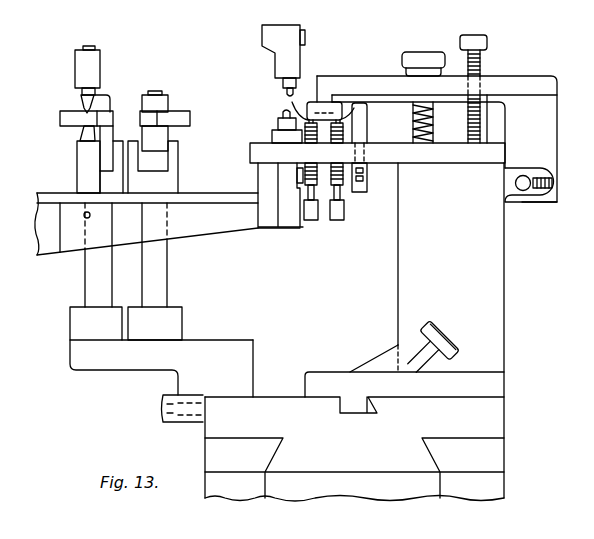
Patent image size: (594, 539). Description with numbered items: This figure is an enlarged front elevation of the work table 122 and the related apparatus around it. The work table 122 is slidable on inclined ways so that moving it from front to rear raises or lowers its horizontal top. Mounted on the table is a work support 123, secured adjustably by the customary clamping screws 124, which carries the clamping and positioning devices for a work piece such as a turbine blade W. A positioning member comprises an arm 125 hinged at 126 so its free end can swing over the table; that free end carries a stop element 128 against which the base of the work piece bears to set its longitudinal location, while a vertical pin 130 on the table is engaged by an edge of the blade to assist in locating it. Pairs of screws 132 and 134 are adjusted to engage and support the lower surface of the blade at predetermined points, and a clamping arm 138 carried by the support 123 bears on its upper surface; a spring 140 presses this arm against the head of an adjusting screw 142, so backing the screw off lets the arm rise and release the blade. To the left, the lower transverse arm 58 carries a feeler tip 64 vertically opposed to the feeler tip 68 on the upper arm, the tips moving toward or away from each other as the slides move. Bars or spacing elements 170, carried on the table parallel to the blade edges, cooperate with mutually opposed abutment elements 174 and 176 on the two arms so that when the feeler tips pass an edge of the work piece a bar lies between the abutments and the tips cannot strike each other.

The abutment element 176 is at (93, 108).
The bars or spacing elements 170 is at (73, 120).
The abutment element 174 is at (83, 141).
The transverse arm 58 is at (167, 307).
The feeler tip 68 is at (282, 95).
The feeler tip 64 is at (283, 117).
The turbine blade work piece W is at (298, 103).
The stop element 128 is at (325, 100).
The clamping screws 134 is at (312, 221).
The clamping screws 132 is at (337, 221).
The vertical pin 130 is at (362, 130).
The arm 125 is at (515, 84).
The spring 140 is at (430, 143).
The adjusting screw 142 is at (433, 42).
The clamping arm 138 is at (487, 111).
The hinge 126 is at (527, 190).
The work support 123 is at (492, 284).
The clamping screws 124 is at (440, 304).
The work table 122 is at (518, 398).